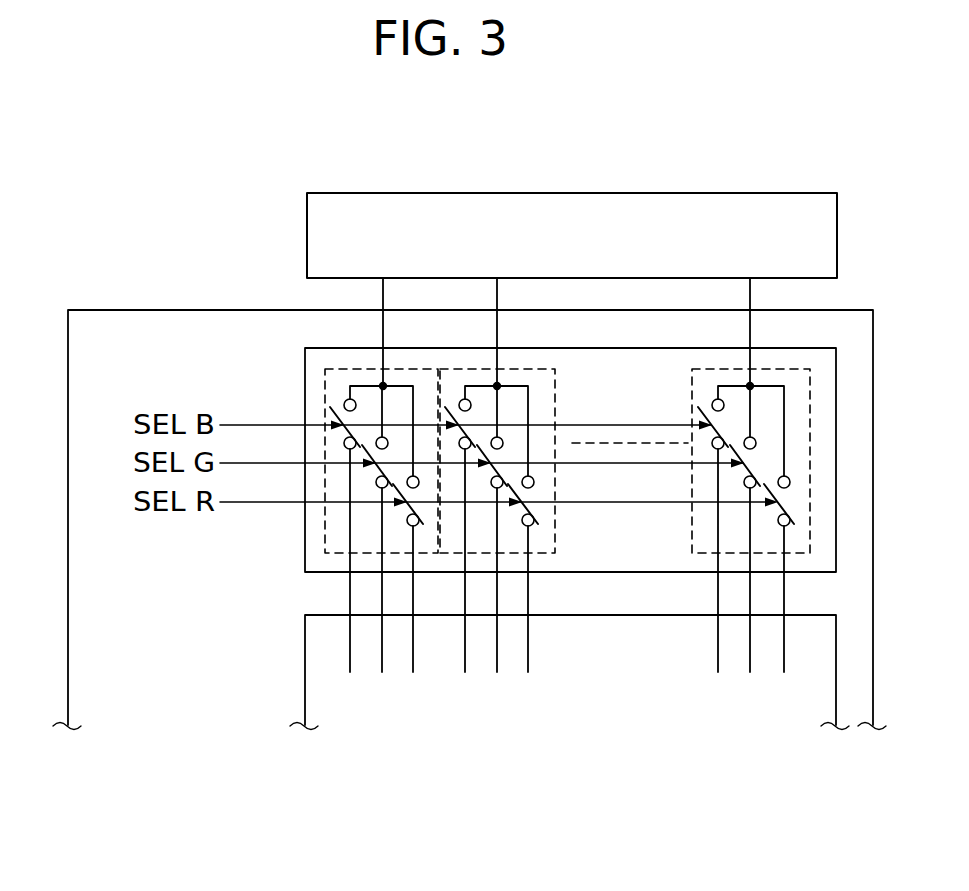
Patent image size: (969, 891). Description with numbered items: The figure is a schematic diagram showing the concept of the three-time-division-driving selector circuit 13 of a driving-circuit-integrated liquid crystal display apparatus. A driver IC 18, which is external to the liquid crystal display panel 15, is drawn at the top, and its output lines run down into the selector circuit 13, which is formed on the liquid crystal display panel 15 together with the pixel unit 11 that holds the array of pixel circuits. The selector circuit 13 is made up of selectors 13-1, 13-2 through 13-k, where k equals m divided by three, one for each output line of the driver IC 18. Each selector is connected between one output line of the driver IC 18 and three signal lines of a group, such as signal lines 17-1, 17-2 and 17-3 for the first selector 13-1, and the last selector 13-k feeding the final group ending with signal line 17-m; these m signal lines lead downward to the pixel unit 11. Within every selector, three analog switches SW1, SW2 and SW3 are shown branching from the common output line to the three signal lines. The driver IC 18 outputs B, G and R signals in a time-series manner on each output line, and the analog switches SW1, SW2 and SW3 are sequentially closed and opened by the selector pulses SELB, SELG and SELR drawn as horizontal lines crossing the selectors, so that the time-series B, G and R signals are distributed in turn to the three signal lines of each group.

The driver IC 18 is at (307, 235).
The selector circuit 13 is at (818, 348).
The selector 13-1 is at (346, 465).
The selector 13-2 is at (562, 545).
The selector 13-k is at (812, 552).
The liquid crystal display panel 15 is at (80, 617).
The pixel unit 11 is at (313, 654).
The signal line 17-1 is at (349, 650).
The signal line 17-2 is at (382, 650).
The signal line 17-3 is at (413, 650).
The signal line 17-m is at (783, 650).
The analog switch SW1 is at (341, 402).
The analog switch SW2 is at (371, 440).
The analog switch SW3 is at (400, 480).